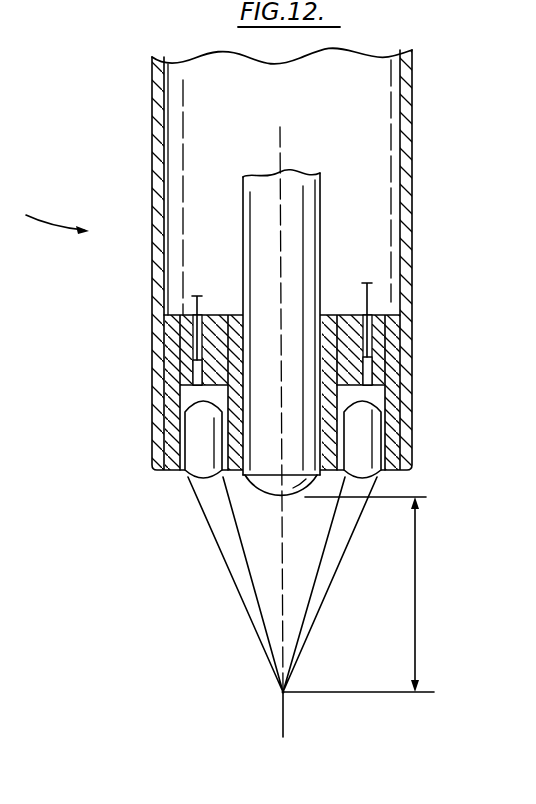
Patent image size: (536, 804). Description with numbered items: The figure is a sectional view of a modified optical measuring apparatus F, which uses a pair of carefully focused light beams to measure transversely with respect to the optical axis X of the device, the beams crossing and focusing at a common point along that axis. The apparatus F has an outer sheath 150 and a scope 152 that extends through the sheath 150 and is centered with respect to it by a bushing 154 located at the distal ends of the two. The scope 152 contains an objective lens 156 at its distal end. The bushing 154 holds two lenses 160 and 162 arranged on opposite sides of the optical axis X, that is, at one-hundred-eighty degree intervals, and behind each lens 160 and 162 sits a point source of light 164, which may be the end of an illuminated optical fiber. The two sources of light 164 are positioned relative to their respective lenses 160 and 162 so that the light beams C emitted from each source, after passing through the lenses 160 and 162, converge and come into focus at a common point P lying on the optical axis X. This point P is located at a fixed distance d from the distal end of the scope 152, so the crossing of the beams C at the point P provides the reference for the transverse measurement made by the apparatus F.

The sheath 150 is at (414, 227).
The scope 152 is at (321, 205).
The bushing 154 is at (170, 343).
The objective lens 156 is at (267, 492).
The lens 160 is at (197, 432).
The lens 162 is at (367, 440).
The point source of light 164 is at (197, 372).
The light beam C is at (200, 398).
The fixed distance d is at (358, 594).
The common point P is at (283, 692).
The optical axis X is at (285, 445).
The optical measuring apparatus F is at (48, 216).